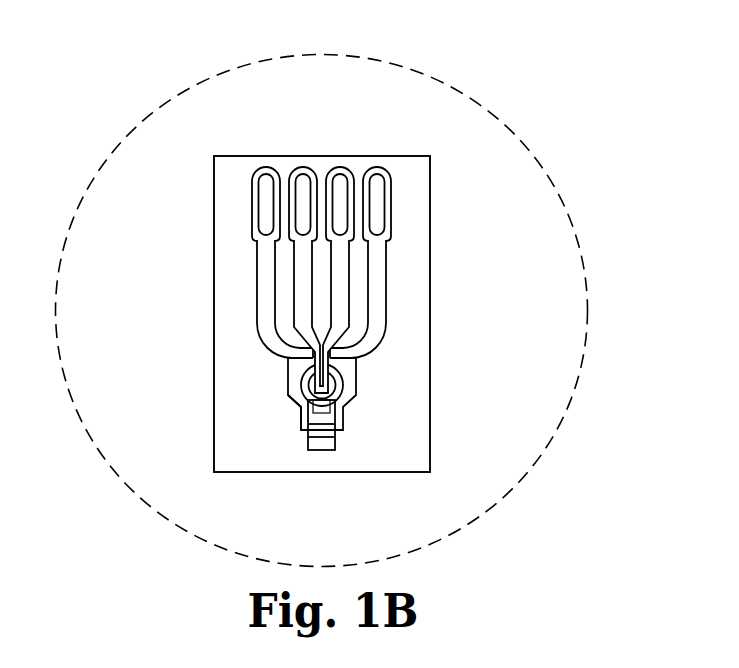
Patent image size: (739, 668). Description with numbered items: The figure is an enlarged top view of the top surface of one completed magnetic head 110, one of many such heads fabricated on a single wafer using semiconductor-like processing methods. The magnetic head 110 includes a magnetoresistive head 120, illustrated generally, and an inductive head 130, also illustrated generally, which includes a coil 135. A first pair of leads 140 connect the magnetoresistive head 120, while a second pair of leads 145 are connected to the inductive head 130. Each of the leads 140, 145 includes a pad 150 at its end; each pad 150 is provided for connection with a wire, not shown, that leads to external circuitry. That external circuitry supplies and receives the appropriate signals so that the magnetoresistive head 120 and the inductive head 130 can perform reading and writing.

The magnetic head 110 is at (430, 440).
The magnetoresistive head 120 is at (349, 451).
The inductive head 130 is at (289, 411).
The coil 135 is at (346, 369).
The first pair of leads 140 is at (262, 268).
The second pair of leads 145 is at (300, 321).
The pad 150 is at (303, 166).